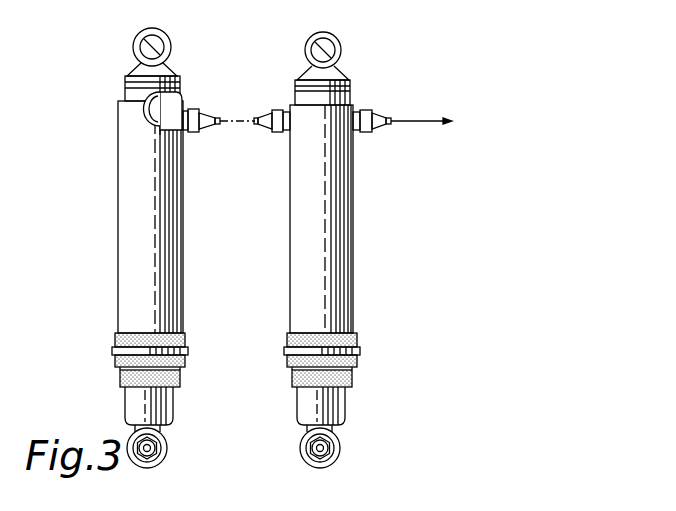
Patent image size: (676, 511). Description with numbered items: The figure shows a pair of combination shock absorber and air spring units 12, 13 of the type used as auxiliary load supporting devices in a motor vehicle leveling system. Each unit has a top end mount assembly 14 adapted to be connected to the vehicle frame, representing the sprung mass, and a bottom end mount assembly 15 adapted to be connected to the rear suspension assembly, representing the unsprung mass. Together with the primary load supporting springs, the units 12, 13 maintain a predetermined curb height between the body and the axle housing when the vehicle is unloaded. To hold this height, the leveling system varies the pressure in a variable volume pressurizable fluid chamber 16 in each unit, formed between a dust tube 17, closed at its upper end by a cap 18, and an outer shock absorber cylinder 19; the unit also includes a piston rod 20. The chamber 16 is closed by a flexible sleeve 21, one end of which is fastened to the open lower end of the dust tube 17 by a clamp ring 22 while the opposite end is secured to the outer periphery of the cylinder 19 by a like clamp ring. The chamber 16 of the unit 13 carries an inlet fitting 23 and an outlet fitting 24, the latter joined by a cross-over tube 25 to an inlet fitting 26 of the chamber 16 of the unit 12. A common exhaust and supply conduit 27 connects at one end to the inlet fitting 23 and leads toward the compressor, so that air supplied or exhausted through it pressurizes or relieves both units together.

The combination shock absorber and air spring unit 12 is at (180, 258).
The combination shock absorber and air spring unit 13 is at (353, 212).
The top end mount assembly 14 is at (133, 50).
The bottom end mount assembly 15 is at (163, 460).
The variable volume pressurizable fluid chamber 16 is at (168, 122).
The dust tube 17 is at (175, 200).
The cap 18 is at (168, 78).
The outer shock absorber cylinder 19 is at (160, 405).
The piston rod 20 is at (142, 98).
The flexible sleeve 21 is at (176, 383).
The clamp ring 22 is at (188, 352).
The inlet fitting 23 is at (366, 130).
The outlet fitting 24 is at (277, 111).
The cross-over tube 25 is at (258, 124).
The inlet fitting 26 is at (196, 118).
The common exhaust and supply conduit 27 is at (386, 118).